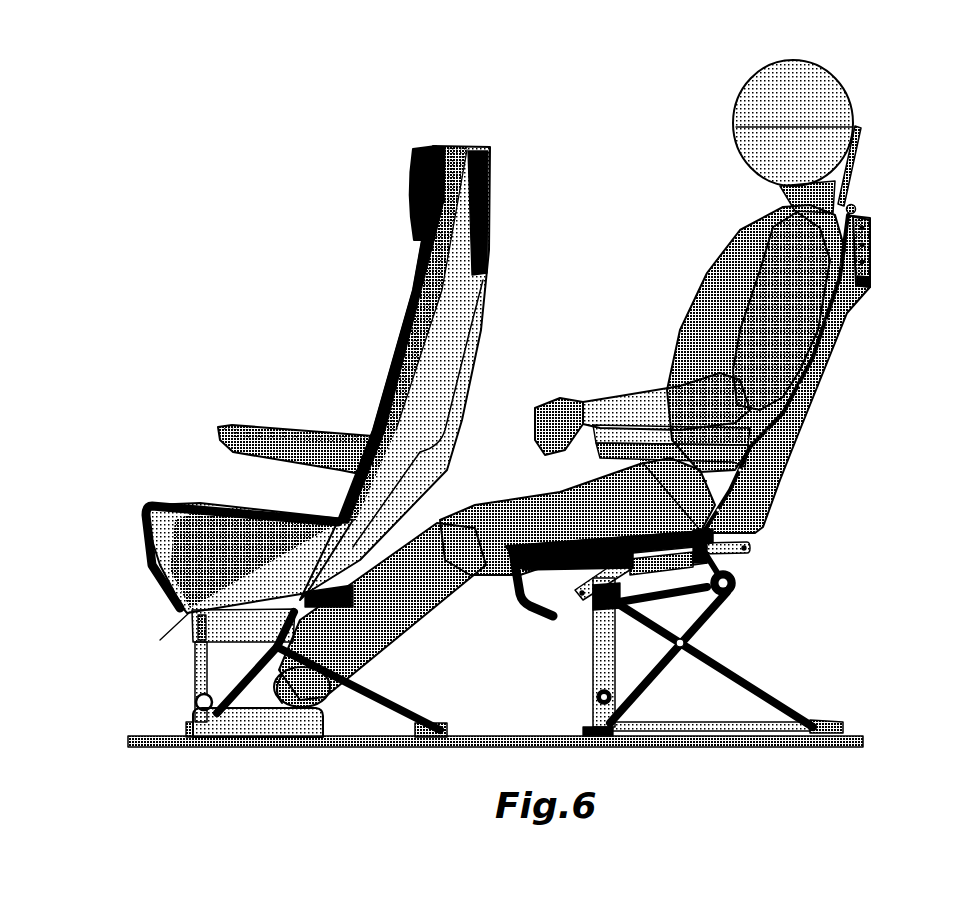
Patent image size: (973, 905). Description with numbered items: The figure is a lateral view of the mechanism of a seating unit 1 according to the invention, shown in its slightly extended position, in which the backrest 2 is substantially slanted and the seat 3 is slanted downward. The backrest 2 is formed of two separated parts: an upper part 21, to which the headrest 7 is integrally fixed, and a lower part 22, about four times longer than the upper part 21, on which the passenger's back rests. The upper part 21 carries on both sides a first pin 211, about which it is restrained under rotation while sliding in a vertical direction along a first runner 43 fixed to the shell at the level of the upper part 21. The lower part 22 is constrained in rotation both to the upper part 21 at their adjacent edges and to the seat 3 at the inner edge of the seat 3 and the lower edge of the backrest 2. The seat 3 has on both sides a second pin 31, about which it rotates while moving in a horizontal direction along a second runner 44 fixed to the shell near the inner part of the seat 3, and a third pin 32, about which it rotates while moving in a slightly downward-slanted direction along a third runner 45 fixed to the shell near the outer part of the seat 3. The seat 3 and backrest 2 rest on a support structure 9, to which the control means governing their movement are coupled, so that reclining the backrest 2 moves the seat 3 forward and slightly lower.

The seating unit 1 is at (486, 118).
The backrest 2 is at (825, 329).
The seat 3 is at (558, 582).
The headrest 7 is at (855, 156).
The support structure 9 is at (700, 640).
The upper part of backrest 21 is at (862, 207).
The lower part of backrest 22 is at (782, 452).
The second pin 31 is at (736, 565).
The third pin 32 is at (573, 592).
The first runner 43 is at (870, 245).
The second runner 44 is at (750, 553).
The third runner 45 is at (615, 608).
The first pin 211 is at (872, 278).